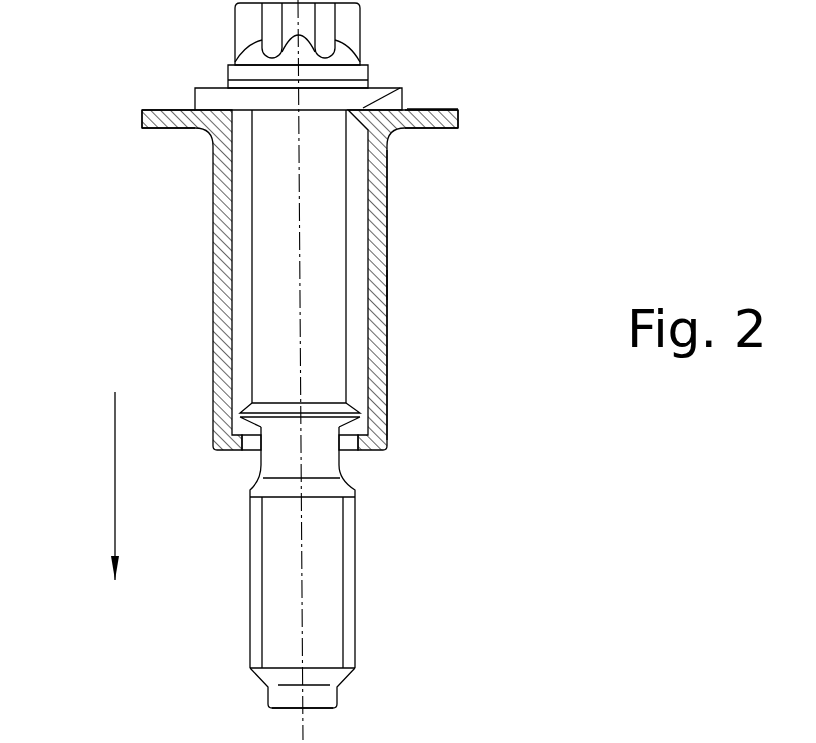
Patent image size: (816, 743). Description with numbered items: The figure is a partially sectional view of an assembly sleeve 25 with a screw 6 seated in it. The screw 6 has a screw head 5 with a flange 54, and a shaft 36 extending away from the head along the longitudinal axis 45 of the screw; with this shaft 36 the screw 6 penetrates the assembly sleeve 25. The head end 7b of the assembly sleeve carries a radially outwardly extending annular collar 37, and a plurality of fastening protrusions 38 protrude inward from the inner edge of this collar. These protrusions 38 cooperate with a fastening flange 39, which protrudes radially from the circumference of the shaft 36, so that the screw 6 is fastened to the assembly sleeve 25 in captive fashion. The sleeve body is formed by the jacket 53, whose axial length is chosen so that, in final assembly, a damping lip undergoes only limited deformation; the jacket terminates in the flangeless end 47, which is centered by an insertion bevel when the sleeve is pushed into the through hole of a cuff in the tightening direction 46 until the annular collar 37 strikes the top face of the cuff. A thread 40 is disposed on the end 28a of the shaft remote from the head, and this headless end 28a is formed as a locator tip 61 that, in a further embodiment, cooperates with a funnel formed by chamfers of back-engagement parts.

The screw head 5 is at (245, 30).
The flange 54 is at (212, 98).
The fastening protrusions 38 is at (400, 88).
The screw 6 is at (213, 222).
The annular collar 37 is at (165, 129).
The head end 7b is at (407, 109).
The jacket 53 is at (387, 206).
The assembly sleeve 25 is at (385, 282).
The shaft 36 is at (272, 289).
The fastening flange 39 is at (328, 403).
The flangeless end 47 is at (378, 452).
The tightening direction 46 is at (115, 470).
The thread 40 is at (348, 545).
The longitudinal axis 45 is at (303, 607).
The locator tip 61 is at (277, 698).
The end remote from the head 28a is at (318, 710).